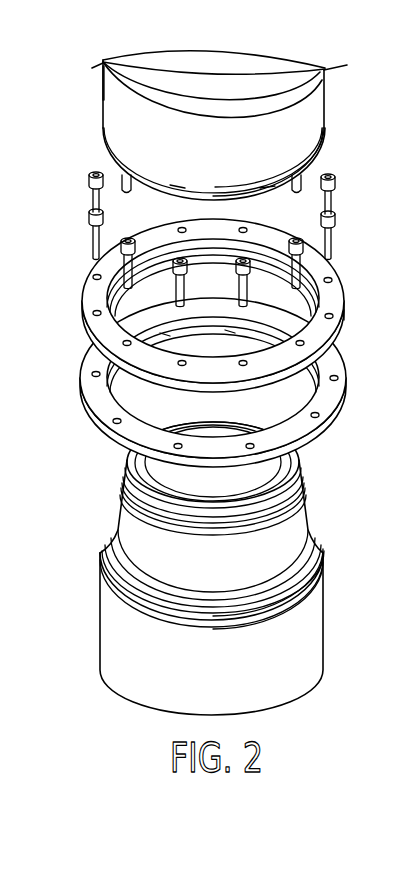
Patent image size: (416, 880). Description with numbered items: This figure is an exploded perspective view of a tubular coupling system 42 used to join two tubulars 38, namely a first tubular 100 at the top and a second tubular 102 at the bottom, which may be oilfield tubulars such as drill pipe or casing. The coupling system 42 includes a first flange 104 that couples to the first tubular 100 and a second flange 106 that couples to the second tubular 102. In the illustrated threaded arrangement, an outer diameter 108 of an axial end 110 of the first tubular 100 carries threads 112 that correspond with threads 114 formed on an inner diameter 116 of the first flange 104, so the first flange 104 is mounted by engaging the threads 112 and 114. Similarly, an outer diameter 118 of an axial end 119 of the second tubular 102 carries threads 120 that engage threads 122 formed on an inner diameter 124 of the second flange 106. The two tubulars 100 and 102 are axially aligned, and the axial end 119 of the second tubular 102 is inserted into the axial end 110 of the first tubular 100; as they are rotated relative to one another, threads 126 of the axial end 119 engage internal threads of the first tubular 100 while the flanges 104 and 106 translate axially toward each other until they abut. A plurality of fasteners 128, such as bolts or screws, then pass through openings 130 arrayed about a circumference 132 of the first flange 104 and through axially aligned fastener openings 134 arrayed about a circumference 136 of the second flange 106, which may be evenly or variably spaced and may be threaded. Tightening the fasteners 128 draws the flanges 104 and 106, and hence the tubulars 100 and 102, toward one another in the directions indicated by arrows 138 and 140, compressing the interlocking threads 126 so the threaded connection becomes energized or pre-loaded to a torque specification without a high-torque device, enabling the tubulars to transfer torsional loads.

The tubulars 38 is at (103, 98).
The tubular coupling system 42 is at (65, 309).
The first tubular 100 is at (313, 113).
The second tubular 102 is at (110, 624).
The first flange 104 is at (340, 323).
The second flange 106 is at (328, 420).
The outer diameter 108 is at (177, 184).
The axial end 110 is at (84, 143).
The threads 112 is at (277, 176).
The threads 114 is at (220, 238).
The inner diameter 116 is at (180, 250).
The outer diameter 118 is at (182, 624).
The axial end 119 is at (317, 503).
The threads 120 is at (233, 623).
The threads 122 is at (161, 333).
The inner diameter 124 is at (231, 331).
The threads 126 is at (258, 513).
The fasteners 128 is at (92, 240).
The openings 130 is at (333, 315).
The circumference 132 is at (335, 338).
The fastener openings 134 is at (93, 375).
The circumference 136 is at (340, 397).
The arrow 138 is at (34, 143).
The arrow 140 is at (34, 521).